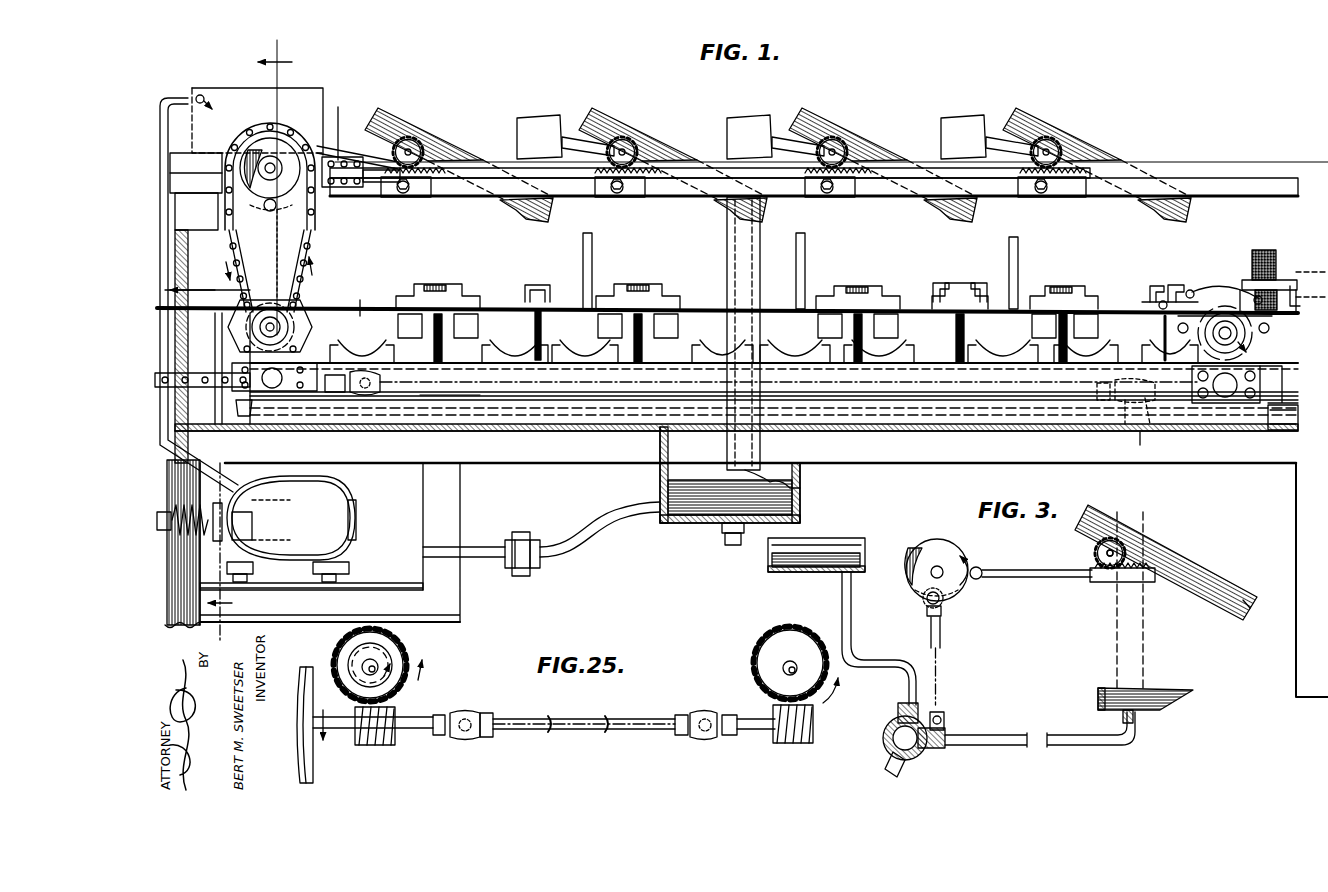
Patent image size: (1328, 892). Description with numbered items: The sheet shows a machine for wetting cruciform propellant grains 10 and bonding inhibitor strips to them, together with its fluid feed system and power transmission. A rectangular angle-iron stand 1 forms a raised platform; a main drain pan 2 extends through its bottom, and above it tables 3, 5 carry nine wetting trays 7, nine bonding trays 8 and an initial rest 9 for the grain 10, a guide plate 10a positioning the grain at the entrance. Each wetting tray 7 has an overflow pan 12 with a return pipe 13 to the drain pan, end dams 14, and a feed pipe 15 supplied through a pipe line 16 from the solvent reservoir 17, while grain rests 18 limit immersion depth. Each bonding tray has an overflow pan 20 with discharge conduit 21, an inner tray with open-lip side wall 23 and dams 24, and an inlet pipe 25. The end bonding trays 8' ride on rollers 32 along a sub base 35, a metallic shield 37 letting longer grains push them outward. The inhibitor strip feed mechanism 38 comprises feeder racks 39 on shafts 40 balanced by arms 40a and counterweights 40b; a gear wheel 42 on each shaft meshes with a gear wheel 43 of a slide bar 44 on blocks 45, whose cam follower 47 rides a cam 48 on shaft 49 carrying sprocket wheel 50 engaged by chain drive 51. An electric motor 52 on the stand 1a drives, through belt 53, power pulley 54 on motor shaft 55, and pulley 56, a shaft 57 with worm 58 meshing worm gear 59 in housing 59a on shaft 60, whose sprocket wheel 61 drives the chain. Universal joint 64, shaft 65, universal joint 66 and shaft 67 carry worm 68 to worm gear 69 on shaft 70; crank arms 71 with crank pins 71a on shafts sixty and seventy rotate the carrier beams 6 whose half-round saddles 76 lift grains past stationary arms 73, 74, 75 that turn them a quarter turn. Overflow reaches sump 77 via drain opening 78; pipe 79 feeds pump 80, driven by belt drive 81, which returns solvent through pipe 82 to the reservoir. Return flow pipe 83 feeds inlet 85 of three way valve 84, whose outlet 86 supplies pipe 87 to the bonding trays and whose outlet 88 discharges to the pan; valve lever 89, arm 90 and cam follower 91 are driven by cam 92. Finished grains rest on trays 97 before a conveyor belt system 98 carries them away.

In FIG. 1, the stand 1 is at (1278, 160).
In FIG. 1, the stand 1a is at (375, 588).
In FIG. 1, the main drain pan 2 is at (1140, 432).
In FIG. 1, the table 3 is at (908, 306).
In FIG. 1, the table 5 is at (250, 335).
In FIG. 1, the carrier beams 6 is at (895, 375).
In FIG. 1, the wetting trays 7 is at (190, 206).
In FIG. 3, the bonding trays 8 is at (1149, 699).
In FIG. 1, the bonding trays 8' is at (741, 269).
In FIG. 1, the initial position rest 9 is at (1300, 292).
In FIG. 1, the propellant grain 10 is at (1266, 242).
In FIG. 1, the guide plate 10a is at (1300, 270).
In FIG. 1, the overflow pan 12 is at (1148, 310).
In FIG. 1, the fluid return pipe 13 is at (1162, 330).
In FIG. 1, the dam 14 is at (1168, 286).
In FIG. 1, the feed pipe 15 is at (1150, 288).
In FIG. 1, the pipe line 16 is at (1140, 445).
In FIG. 1, the solvent reservoir 17 is at (222, 93).
In FIG. 3, the solvent reservoir 17 is at (847, 540).
In FIG. 1, the grain rests 18 is at (1152, 286).
In FIG. 1, the overflow pan 20 is at (452, 282).
In FIG. 1, the overflow discharge conduit 21 is at (1040, 330).
In FIG. 1, the side wall 23 is at (1090, 288).
In FIG. 1, the dams 24 is at (1064, 288).
In FIG. 1, the inlet pipe 25 is at (790, 377).
In FIG. 1, the rollers 32 is at (470, 314).
In FIG. 1, the sub base 35 is at (372, 352).
In FIG. 1, the metallic shield 37 is at (430, 282).
In FIG. 1, the inhibitor strip feed mechanism 38 is at (1003, 120).
In FIG. 3, the inhibitor strip feed mechanism 38 is at (1178, 545).
In FIG. 1, the feeder racks 39 is at (1040, 123).
In FIG. 3, the feeder racks 39 is at (1203, 578).
In FIG. 1, the shaft 40 is at (1050, 150).
In FIG. 3, the shaft 40 is at (1108, 553).
In FIG. 1, the arm 40a is at (1010, 140).
In FIG. 1, the counterweight 40b is at (970, 130).
In FIG. 1, the gear wheel 42 is at (1070, 160).
In FIG. 3, the gear wheel 42 is at (1097, 558).
In FIG. 1, the gear wheel 43 is at (1090, 172).
In FIG. 3, the gear wheel 43 is at (1113, 582).
In FIG. 1, the slide bar 44 is at (990, 198).
In FIG. 3, the slide bar 44 is at (1147, 582).
In FIG. 1, the blocks 45 is at (1025, 198).
In FIG. 1, the cam follower 47 is at (318, 142).
In FIG. 3, the cam follower 47 is at (982, 570).
In FIG. 1, the cam 48 is at (270, 176).
In FIG. 3, the cam 48 is at (956, 555).
In FIG. 1, the shaft 49 is at (270, 154).
In FIG. 3, the shaft 49 is at (940, 561).
In FIG. 1, the sprocket wheel 50 is at (345, 190).
In FIG. 1, the chain drive 51 is at (312, 210).
In FIG. 1, the electric motor 52 is at (350, 514).
In FIG. 1, the belt 53 is at (205, 456).
In FIG. 1, the power pulley 54 is at (198, 512).
In FIG. 1, the motor shaft 55 is at (188, 540).
In FIG. 1, the pulley 56 is at (212, 425).
In FIG. 25, the pulley 56 is at (300, 680).
In FIG. 1, the shaft 57 is at (335, 395).
In FIG. 25, the shaft 57 is at (410, 730).
In FIG. 25, the worm 58 is at (358, 743).
In FIG. 25, the worm gear 59 is at (420, 655).
In FIG. 1, the gear wheel housing 59a is at (290, 312).
In FIG. 1, the shaft 60 is at (298, 330).
In FIG. 25, the shaft 60 is at (376, 659).
In FIG. 1, the sprocket wheel 61 is at (292, 320).
In FIG. 25, the sprocket wheel 61 is at (392, 658).
In FIG. 1, the ball and socket universal joint 64 is at (366, 398).
In FIG. 25, the ball and socket universal joint 64 is at (466, 740).
In FIG. 1, the shaft 65 is at (462, 392).
In FIG. 25, the shaft 65 is at (612, 724).
In FIG. 1, the universal joint 66 is at (1120, 410).
In FIG. 25, the universal joint 66 is at (704, 740).
In FIG. 1, the shaft 67 is at (1160, 412).
In FIG. 25, the shaft 67 is at (752, 730).
In FIG. 25, the worm 68 is at (810, 743).
In FIG. 25, the worm gear 69 is at (758, 660).
In FIG. 1, the shaft 70 is at (1226, 330).
In FIG. 25, the shaft 70 is at (792, 657).
In FIG. 1, the crank arms 71 is at (1262, 360).
In FIG. 1, the crank pins 71a is at (1226, 398).
In FIG. 1, the stationary arm 73 is at (1016, 254).
In FIG. 1, the stationary arm 74 is at (802, 252).
In FIG. 1, the stationary arm 75 is at (590, 250).
In FIG. 1, the half-round saddles 76 is at (345, 355).
In FIG. 1, the solvent collecting sump 77 is at (790, 495).
In FIG. 1, the drain opening 78 is at (686, 426).
In FIG. 1, the pipe 79 is at (575, 540).
In FIG. 1, the pump 80 is at (250, 532).
In FIG. 1, the belt drive 81 is at (252, 516).
In FIG. 1, the pipe 82 is at (163, 100).
In FIG. 1, the return flow pipe 83 is at (215, 170).
In FIG. 3, the return flow pipe 83 is at (852, 640).
In FIG. 1, the three way valve 84 is at (264, 440).
In FIG. 3, the three way valve 84 is at (890, 755).
In FIG. 3, the inlet 85 is at (905, 712).
In FIG. 3, the outlet 86 is at (932, 750).
In FIG. 1, the pipe 87 is at (440, 403).
In FIG. 3, the pipe 87 is at (1017, 740).
In FIG. 3, the outlet 88 is at (908, 772).
In FIG. 3, the valve lever 89 is at (944, 720).
In FIG. 1, the arm 90 is at (269, 271).
In FIG. 3, the arm 90 is at (942, 676).
In FIG. 1, the cam follower 91 is at (262, 210).
In FIG. 3, the cam follower 91 is at (942, 600).
In FIG. 1, the cam 92 is at (215, 187).
In FIG. 3, the cam 92 is at (912, 550).
In FIG. 1, the trays 97 is at (340, 300).
In FIG. 1, the conveyor belt system 98 is at (207, 274).